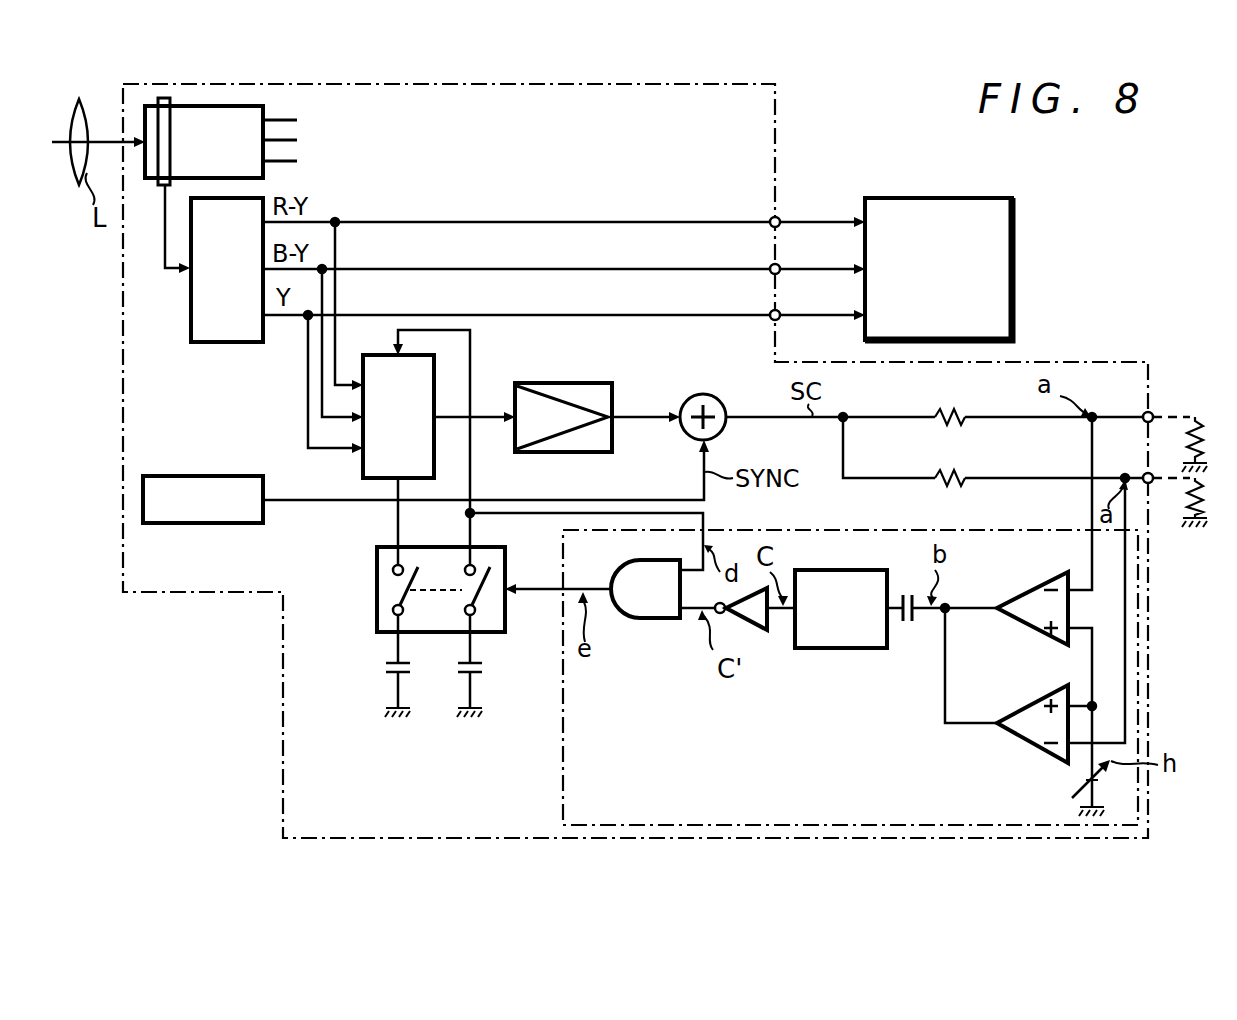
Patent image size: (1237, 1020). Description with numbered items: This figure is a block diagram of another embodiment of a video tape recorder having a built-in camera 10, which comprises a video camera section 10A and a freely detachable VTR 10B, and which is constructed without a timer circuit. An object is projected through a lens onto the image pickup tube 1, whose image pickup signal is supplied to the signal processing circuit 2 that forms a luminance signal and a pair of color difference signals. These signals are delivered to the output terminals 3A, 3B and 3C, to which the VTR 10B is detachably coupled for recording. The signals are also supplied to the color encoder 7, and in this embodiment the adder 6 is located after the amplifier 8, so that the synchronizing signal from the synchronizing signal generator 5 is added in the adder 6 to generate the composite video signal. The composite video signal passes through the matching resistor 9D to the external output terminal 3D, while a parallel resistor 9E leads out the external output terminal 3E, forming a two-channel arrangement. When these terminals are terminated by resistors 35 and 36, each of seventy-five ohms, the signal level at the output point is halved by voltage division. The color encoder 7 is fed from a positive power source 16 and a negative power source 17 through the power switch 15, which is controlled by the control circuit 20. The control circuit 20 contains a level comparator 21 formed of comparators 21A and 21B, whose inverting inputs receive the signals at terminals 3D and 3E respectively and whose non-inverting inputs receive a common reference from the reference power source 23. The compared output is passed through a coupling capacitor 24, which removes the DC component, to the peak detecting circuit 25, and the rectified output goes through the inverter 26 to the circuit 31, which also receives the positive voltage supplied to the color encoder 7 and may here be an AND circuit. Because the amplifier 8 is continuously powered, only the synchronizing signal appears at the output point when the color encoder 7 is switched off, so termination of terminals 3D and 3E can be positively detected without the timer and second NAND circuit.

The image pickup tube 1 is at (265, 105).
The signal processing circuit 2 is at (210, 343).
The output terminal 3A is at (779, 217).
The output terminal 3B is at (779, 264).
The output terminal 3C is at (779, 310).
The external output terminal 3D is at (1144, 413).
The external output terminal 3E is at (1144, 475).
The synchronizing signal generator 5 is at (184, 524).
The adder 6 is at (703, 394).
The color encoder 7 is at (362, 455).
The amplifier 8 is at (585, 453).
The matching resistor 9D is at (943, 416).
The resistor 9E is at (943, 477).
The built-in camera type VTR 10 is at (878, 158).
The video camera section 10A is at (878, 113).
The VTR 10B is at (1110, 289).
The power switch 15 is at (377, 598).
The positive power source 16 is at (480, 672).
The negative power source 17 is at (390, 672).
The control circuit 20 is at (870, 525).
The level comparator 21 is at (985, 682).
The comparator 21A is at (1020, 592).
The comparator 21B is at (1016, 745).
The reference power source 23 is at (1075, 785).
The coupling capacitor 24 is at (911, 622).
The peak detecting circuit 25 is at (851, 650).
The inverter 26 is at (769, 629).
The first NAND circuit 31 is at (662, 620).
The resistor 35 is at (1195, 418).
The resistor 36 is at (1195, 522).